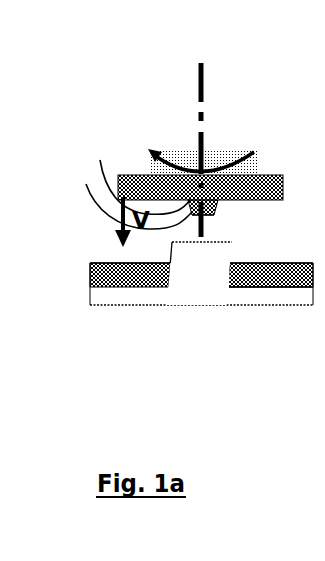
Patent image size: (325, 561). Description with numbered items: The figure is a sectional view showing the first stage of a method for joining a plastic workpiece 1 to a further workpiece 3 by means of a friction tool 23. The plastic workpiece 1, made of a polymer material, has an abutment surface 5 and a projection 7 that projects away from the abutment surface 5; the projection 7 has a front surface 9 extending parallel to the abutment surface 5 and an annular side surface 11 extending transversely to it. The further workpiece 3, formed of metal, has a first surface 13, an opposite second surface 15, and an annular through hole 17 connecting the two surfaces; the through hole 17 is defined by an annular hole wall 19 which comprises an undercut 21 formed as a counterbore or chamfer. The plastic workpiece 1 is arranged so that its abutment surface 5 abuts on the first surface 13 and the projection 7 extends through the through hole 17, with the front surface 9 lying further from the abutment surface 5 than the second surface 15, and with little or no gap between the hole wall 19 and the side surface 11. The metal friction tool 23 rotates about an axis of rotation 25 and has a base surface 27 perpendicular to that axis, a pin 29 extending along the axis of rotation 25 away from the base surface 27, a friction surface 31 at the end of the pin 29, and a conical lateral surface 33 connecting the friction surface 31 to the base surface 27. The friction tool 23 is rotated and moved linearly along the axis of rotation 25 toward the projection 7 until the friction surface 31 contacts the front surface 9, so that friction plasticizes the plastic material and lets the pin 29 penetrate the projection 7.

The plastic workpiece 1 is at (95, 298).
The further workpiece 3 is at (92, 273).
The abutment surface 5 is at (258, 287).
The projection 7 is at (220, 260).
The front surface 9 is at (218, 243).
The annular side surface 11 is at (171, 243).
The first surface 13 is at (296, 287).
The second surface 15 is at (281, 262).
The annular through hole 17 is at (172, 242).
The annular hole wall 19 is at (232, 242).
The undercut 21 is at (170, 264).
The friction tool 23 is at (211, 195).
The axis of rotation 25 is at (198, 83).
The base surface 27 is at (140, 176).
The pin 29 is at (209, 206).
The friction surface 31 is at (193, 206).
The conical lateral surface 33 is at (127, 196).